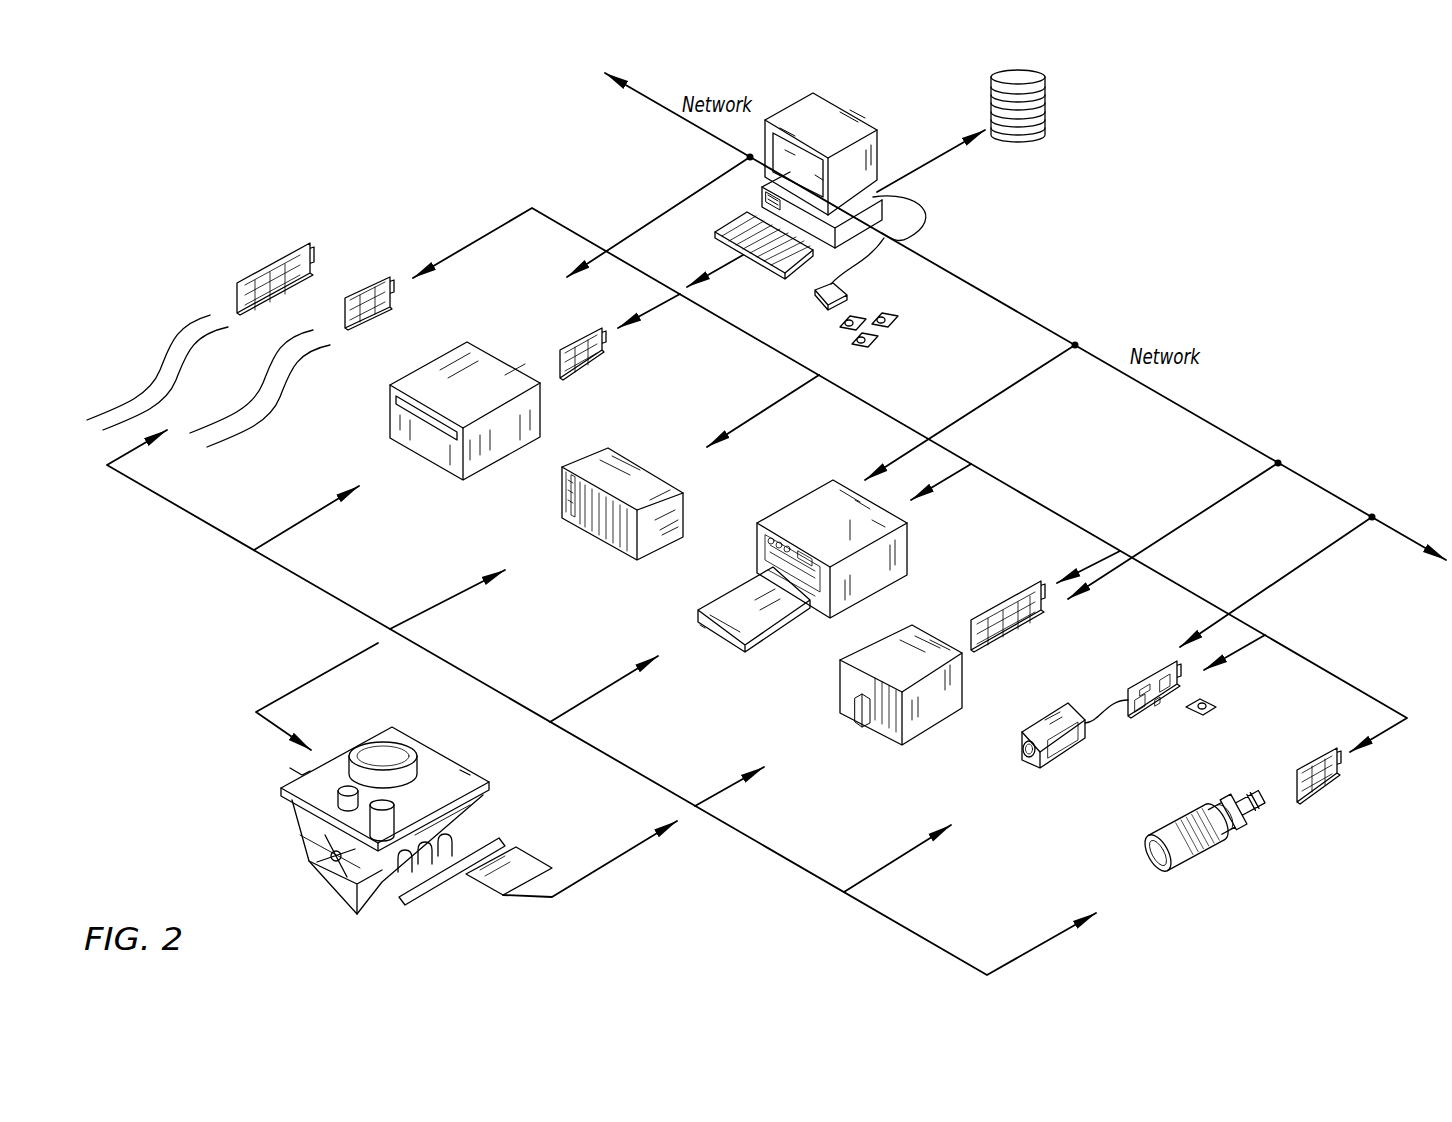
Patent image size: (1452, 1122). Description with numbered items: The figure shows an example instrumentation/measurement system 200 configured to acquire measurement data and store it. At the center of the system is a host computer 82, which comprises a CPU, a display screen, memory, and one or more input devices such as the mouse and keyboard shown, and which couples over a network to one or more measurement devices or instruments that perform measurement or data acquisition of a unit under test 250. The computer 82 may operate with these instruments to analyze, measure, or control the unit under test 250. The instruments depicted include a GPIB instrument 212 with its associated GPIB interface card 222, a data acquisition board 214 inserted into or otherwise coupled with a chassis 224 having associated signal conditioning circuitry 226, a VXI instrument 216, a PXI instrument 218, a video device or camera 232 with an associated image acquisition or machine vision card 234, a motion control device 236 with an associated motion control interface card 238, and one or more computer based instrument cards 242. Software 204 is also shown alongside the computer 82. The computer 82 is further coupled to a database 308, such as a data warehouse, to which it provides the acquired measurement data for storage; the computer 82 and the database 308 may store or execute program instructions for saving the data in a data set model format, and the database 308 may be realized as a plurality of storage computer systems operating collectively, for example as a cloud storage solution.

The instrumentation/measurement system 200 is at (1203, 148).
The host computer 82 is at (845, 108).
The database 308 is at (1022, 140).
The software 204 is at (873, 347).
The computer based instrument cards 242 is at (263, 268).
The GPIB instrument 212 is at (437, 363).
The GPIB interface card 222 is at (580, 338).
The PXI instrument 218 is at (632, 470).
The VXI instrument 216 is at (795, 512).
The data acquisition board 214 is at (1013, 627).
The chassis 224 is at (878, 712).
The signal conditioning circuitry 226 is at (868, 722).
The video device or camera 232 is at (1058, 752).
The image acquisition card 234 is at (1147, 673).
The motion control device 236 is at (1195, 853).
The motion control interface card 238 is at (1320, 790).
The unit under test 250 is at (382, 899).